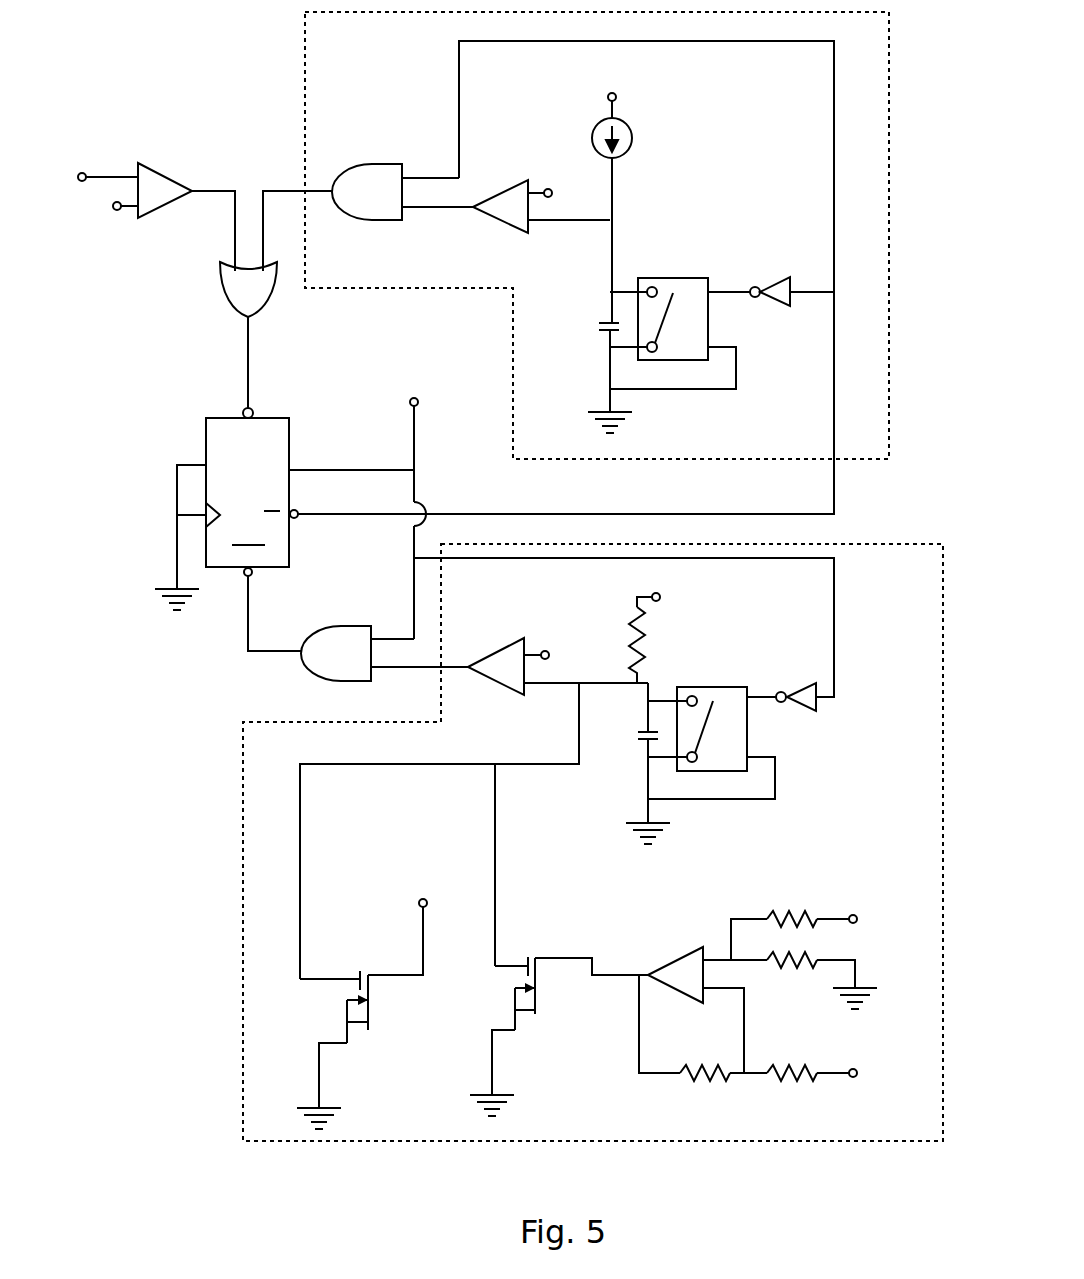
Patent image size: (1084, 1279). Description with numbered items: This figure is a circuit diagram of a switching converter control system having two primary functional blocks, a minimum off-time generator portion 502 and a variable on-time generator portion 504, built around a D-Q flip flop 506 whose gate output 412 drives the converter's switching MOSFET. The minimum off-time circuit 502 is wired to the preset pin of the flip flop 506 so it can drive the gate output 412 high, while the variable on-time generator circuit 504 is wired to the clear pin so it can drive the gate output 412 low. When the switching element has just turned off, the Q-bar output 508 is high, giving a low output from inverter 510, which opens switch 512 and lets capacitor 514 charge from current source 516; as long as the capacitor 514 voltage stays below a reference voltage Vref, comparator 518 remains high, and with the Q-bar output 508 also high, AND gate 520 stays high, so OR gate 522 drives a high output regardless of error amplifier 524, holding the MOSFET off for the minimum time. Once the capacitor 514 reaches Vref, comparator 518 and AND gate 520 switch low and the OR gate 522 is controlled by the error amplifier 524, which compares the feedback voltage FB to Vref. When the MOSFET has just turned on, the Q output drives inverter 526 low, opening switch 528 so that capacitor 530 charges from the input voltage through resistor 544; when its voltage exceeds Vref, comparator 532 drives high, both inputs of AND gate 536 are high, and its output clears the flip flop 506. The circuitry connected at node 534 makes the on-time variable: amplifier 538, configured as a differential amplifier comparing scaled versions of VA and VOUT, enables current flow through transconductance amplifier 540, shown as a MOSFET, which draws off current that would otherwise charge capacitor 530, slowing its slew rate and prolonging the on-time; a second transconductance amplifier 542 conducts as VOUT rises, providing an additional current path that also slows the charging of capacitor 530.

The gate output 412 is at (414, 420).
The minimum off-time generator portion 502 is at (364, 52).
The variable on-time generator portion 504 is at (924, 587).
The D-Q flip flop 506 is at (206, 432).
The Q-bar output 508 is at (545, 512).
The inverter 510 is at (770, 280).
The switch 512 is at (688, 278).
The capacitor 514 is at (605, 320).
The current source 516 is at (592, 130).
The comparator 518 is at (515, 183).
The AND gate 520 is at (388, 163).
The OR gate 522 is at (220, 278).
The error amplifier 524 is at (180, 180).
The inverter 526 is at (805, 690).
The switch 528 is at (727, 688).
The capacitor 530 is at (645, 740).
The comparator 532 is at (498, 648).
The node 534 is at (571, 692).
The AND gate 536 is at (362, 625).
The amplifier 538 is at (672, 960).
The transconductance amplifier 540 is at (542, 951).
The second transconductance amplifier 542 is at (363, 963).
The resistor 544 is at (630, 628).